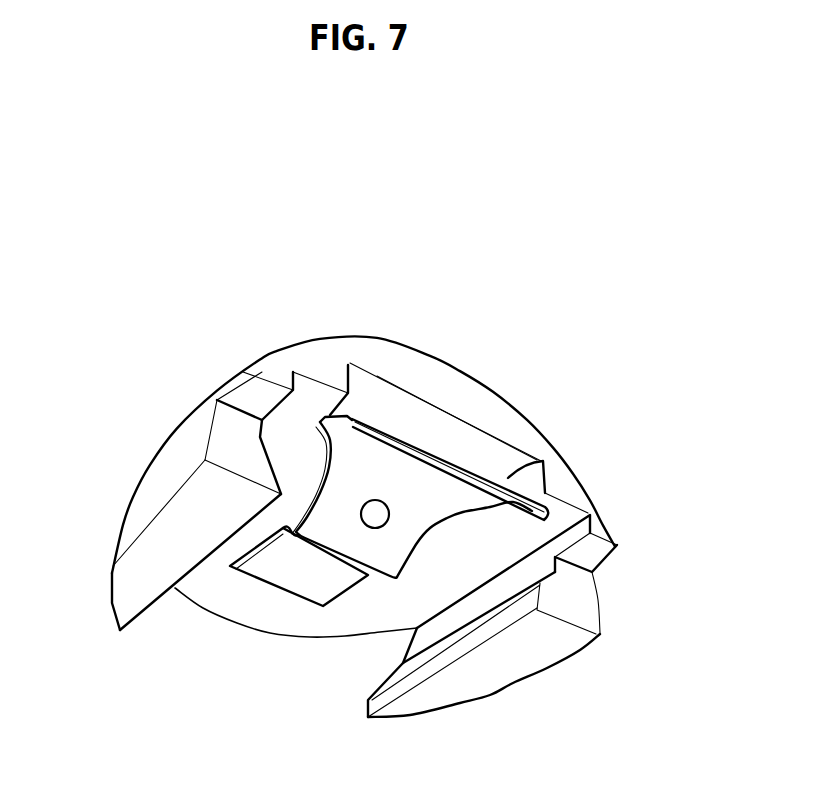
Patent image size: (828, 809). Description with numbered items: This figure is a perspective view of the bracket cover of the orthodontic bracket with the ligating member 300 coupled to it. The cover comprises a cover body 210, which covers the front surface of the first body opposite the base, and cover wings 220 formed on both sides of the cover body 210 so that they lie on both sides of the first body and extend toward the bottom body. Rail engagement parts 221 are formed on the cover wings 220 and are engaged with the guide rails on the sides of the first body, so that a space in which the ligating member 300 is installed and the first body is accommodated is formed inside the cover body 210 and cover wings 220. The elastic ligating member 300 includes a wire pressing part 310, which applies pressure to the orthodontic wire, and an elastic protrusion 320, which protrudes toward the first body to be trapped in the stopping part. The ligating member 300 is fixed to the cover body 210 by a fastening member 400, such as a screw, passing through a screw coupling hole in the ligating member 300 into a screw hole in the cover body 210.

The cover body 210 is at (430, 357).
The cover wings 220 is at (167, 465).
The rail engagement parts 221 is at (200, 567).
The ligating member 300 is at (366, 492).
The wire pressing part 310 is at (377, 430).
The elastic protrusion 320 is at (340, 562).
The fastening member 400 is at (381, 510).